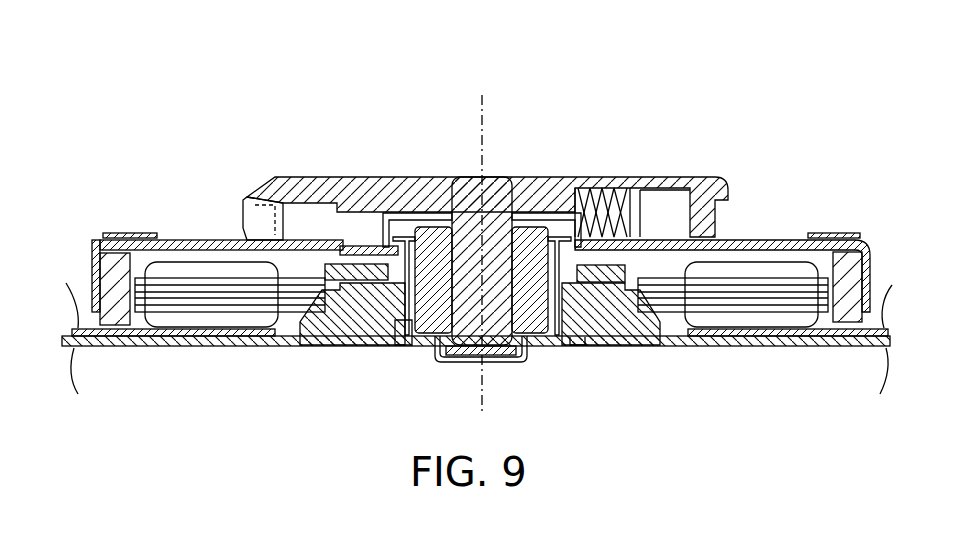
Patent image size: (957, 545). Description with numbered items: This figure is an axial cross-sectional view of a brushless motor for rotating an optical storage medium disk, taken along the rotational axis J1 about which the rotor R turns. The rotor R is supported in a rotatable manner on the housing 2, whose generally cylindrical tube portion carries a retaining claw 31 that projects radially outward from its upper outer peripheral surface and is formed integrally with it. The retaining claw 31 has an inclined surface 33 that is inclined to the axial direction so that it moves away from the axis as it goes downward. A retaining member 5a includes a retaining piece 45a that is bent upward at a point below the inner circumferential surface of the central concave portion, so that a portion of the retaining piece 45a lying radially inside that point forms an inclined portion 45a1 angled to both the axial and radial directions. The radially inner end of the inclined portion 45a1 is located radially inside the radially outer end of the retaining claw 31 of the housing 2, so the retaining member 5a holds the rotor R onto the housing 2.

The housing 2 is at (593, 347).
The retaining member 5a is at (367, 245).
The retaining claw 31 is at (557, 210).
The inclined surface 33 is at (403, 280).
The retaining piece 45a is at (308, 178).
The inclined portion 45a1 is at (410, 333).
The rotor R is at (767, 213).
The rotational axis J1 is at (482, 100).